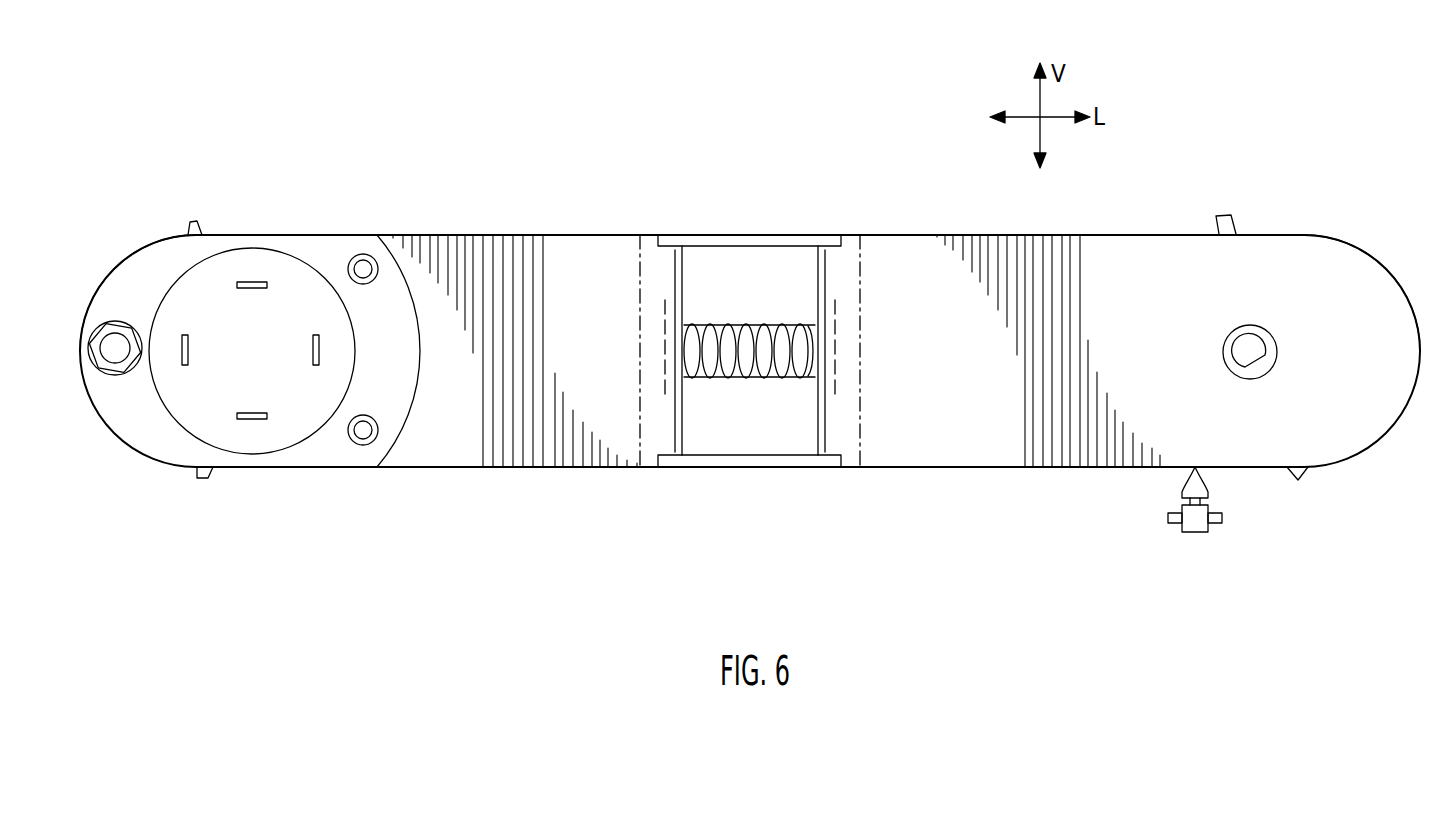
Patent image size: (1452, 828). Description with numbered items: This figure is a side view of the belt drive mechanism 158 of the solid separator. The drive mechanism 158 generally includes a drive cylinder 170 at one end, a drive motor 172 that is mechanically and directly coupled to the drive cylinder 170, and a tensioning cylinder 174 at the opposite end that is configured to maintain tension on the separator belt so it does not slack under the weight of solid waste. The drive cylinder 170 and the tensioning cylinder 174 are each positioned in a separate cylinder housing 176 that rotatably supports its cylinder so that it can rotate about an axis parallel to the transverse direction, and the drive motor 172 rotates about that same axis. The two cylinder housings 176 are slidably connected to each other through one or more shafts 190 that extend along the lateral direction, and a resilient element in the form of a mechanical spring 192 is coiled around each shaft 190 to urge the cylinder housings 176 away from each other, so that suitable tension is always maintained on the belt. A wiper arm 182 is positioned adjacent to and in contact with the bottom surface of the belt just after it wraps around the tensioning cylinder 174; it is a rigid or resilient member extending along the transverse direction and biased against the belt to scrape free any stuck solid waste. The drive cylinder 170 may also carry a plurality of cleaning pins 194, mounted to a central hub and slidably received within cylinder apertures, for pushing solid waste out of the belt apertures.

The drive mechanism 158 is at (255, 482).
The drive cylinder 170 is at (215, 222).
The drive motor 172 is at (269, 361).
The tensioning cylinder 174 is at (1250, 203).
The cylinder housing 176 is at (557, 361).
The wiper arm 182 is at (1194, 520).
The shaft 190 is at (784, 345).
The mechanical spring 192 is at (725, 325).
The cleaning pins 194 is at (194, 222).